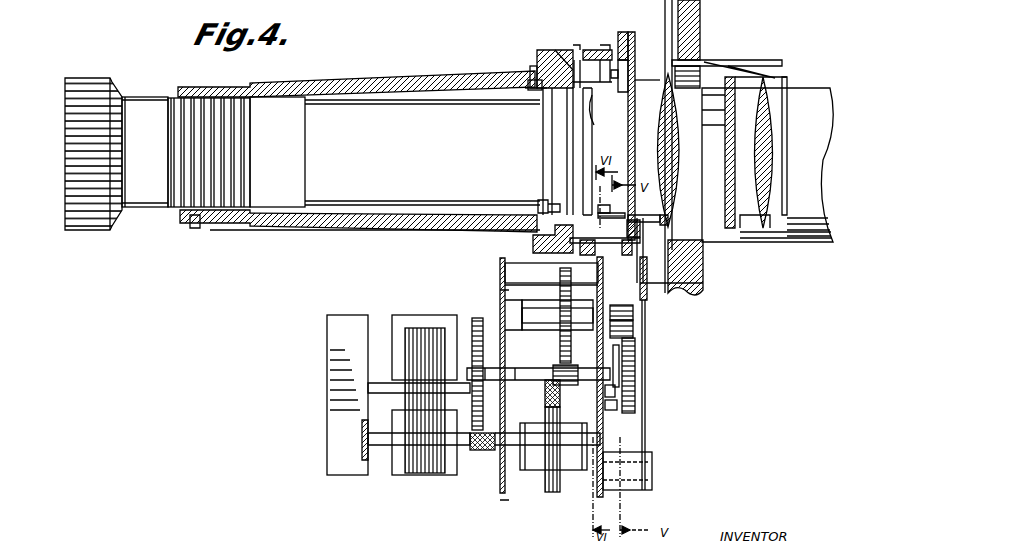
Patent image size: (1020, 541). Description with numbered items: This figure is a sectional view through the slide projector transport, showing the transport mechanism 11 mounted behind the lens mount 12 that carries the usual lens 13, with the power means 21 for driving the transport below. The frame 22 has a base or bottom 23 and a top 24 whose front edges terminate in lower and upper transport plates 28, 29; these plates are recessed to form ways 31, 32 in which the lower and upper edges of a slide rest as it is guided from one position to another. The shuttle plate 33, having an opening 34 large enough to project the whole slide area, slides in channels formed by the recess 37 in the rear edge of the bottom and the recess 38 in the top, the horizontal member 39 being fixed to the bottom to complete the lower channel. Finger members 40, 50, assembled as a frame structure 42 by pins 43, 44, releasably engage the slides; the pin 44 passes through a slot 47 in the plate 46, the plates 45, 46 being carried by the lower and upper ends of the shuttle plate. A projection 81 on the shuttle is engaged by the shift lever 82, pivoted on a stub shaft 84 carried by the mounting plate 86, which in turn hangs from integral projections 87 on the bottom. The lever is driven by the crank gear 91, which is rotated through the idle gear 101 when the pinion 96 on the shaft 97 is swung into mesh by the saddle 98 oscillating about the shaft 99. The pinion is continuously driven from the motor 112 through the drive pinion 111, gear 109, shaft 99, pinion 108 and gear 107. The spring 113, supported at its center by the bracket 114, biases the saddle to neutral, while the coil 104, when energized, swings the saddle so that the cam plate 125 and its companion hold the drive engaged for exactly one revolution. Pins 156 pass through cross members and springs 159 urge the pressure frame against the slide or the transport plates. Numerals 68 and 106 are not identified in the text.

The transport mechanism 11 is at (640, 120).
The lens mount 12 is at (382, 78).
The lens 13 is at (140, 97).
The power means 21 is at (440, 483).
The frame 22 is at (562, 50).
The base or bottom 23 is at (560, 258).
The top 24 is at (588, 50).
The lower transport plate 28 is at (548, 206).
The upper transport plate 29 is at (542, 90).
The lower way 31 is at (537, 248).
The upper way 32 is at (558, 62).
The shuttle plate 33 is at (640, 70).
The opening 34 is at (672, 115).
The recess 37 is at (680, 262).
The recess 38 is at (624, 32).
The horizontal member 39 is at (703, 283).
The finger member 40 is at (588, 195).
The frame structure 42 is at (573, 138).
The pin 43 is at (612, 205).
The pin 44 is at (594, 95).
The plate 45 is at (662, 220).
The plate 46 is at (628, 74).
The slot 47 is at (635, 83).
The finger member 50 is at (626, 215).
The gear 68 is at (590, 245).
The projection 81 is at (670, 222).
The shift lever 82 is at (646, 357).
The stub shaft 84 is at (640, 467).
The mounting plate 86 is at (503, 497).
The integral projections 87 is at (605, 285).
The crank gear 91 is at (636, 378).
The pinion 96 is at (634, 312).
The shaft 97 is at (518, 315).
The saddle 98 is at (528, 330).
The shaft 99 is at (536, 368).
The idle gear 101 is at (634, 330).
The coil 104 is at (535, 470).
The gear 106 is at (545, 395).
The gear 107 is at (553, 298).
The pinion 108 is at (575, 386).
The gear 109 is at (476, 318).
The drive pinion 111 is at (484, 450).
The motor 112 is at (415, 328).
The spring 113 is at (616, 393).
The bracket 114 is at (618, 408).
The cam plate 125 is at (620, 360).
The pin 156 is at (540, 92).
The spring 159 is at (533, 66).